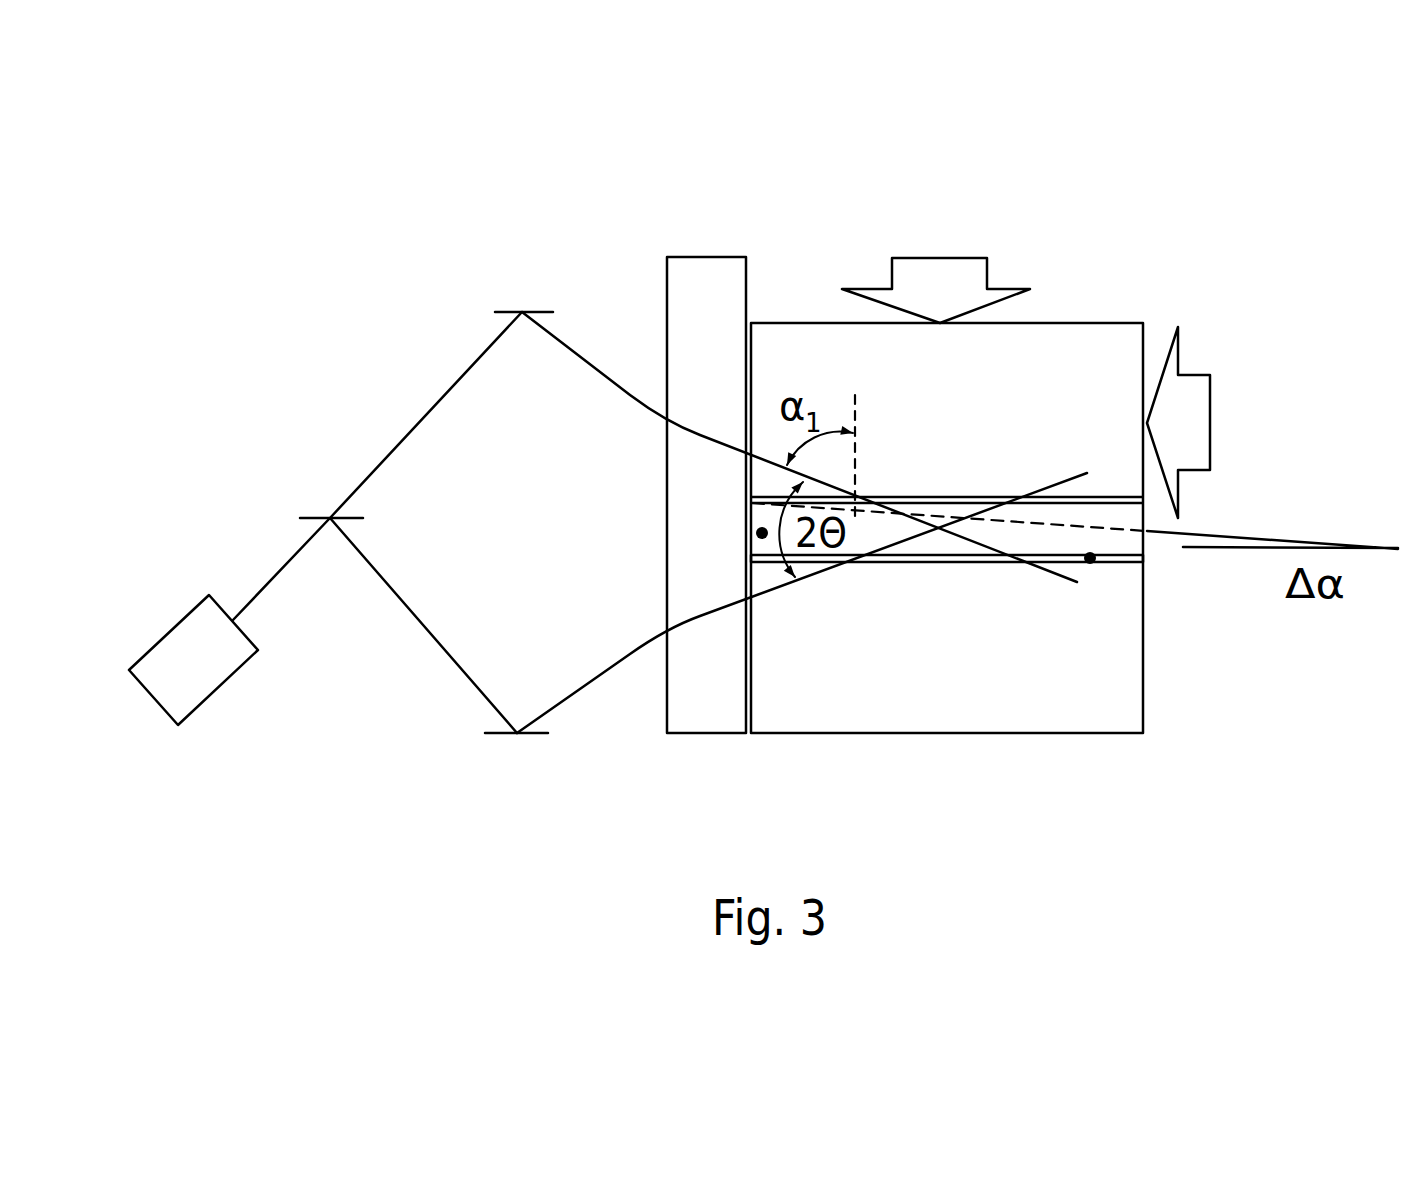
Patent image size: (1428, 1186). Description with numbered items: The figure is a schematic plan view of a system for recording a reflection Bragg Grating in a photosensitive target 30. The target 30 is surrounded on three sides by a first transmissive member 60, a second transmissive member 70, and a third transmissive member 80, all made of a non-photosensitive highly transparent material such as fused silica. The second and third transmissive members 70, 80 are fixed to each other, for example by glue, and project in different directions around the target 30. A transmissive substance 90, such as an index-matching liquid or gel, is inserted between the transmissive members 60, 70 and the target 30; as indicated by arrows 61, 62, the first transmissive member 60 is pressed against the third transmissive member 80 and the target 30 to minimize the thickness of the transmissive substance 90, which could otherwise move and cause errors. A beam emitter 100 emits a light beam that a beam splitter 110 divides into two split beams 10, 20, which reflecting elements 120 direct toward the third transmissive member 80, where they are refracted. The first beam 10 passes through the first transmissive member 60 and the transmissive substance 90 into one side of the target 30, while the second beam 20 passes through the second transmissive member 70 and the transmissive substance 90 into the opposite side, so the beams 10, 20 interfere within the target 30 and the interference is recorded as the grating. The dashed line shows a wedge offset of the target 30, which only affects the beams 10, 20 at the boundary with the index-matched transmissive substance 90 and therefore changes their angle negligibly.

The first beam 10 is at (612, 382).
The second beam 20 is at (610, 667).
The photosensitive target 30 is at (750, 530).
The first transmissive member 60 is at (1053, 338).
The arrow 61 is at (936, 261).
The arrow 62 is at (1208, 422).
The second transmissive member 70 is at (1010, 713).
The third transmissive member 80 is at (705, 275).
The transmissive substance 90 is at (1097, 563).
The beam emitter 100 is at (175, 684).
The beam splitter 110 is at (322, 512).
The reflecting elements 120 is at (517, 307).